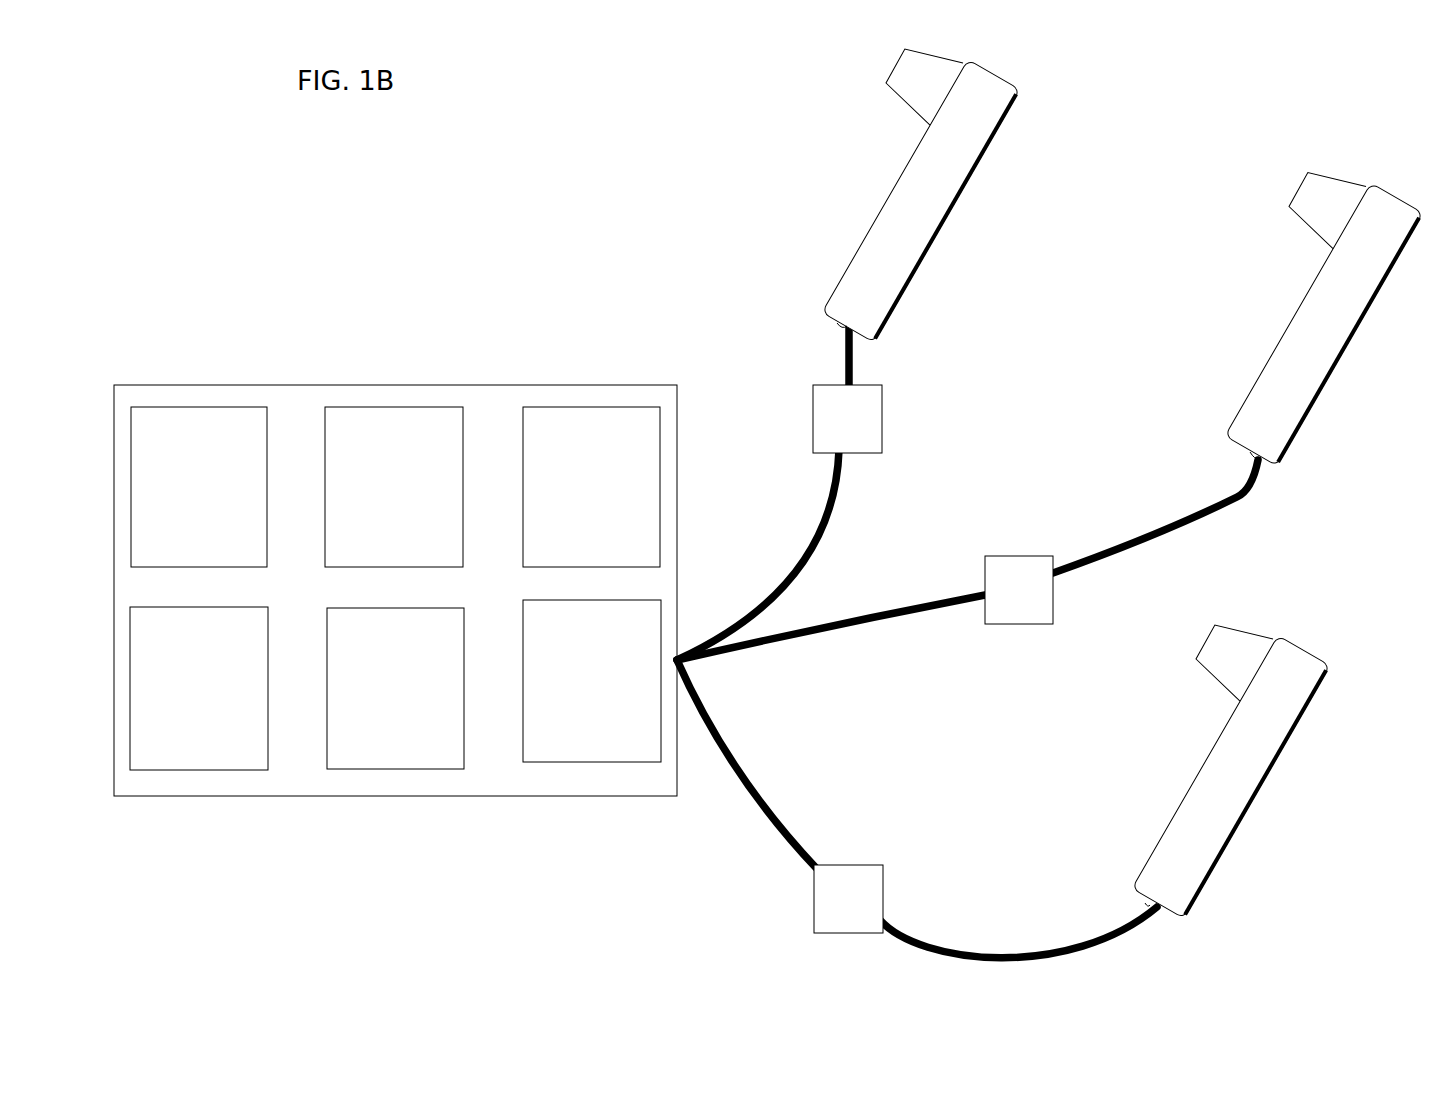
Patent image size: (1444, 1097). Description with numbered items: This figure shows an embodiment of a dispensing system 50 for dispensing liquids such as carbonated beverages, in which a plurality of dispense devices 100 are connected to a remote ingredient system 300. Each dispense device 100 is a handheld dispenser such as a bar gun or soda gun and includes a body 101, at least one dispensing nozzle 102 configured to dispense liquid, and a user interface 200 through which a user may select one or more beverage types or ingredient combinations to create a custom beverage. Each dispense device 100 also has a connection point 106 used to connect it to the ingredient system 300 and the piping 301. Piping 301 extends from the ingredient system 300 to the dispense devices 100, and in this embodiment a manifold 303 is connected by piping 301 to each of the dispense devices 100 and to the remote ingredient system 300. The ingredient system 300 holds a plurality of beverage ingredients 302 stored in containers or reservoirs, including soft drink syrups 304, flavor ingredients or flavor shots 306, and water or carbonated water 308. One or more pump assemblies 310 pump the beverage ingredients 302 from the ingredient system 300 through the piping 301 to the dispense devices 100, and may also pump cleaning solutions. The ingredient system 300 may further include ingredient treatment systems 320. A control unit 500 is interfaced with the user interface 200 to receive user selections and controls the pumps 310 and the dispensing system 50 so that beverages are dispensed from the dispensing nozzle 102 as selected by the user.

The dispensing system 50 is at (541, 206).
The dispense device 100 is at (1020, 476).
The body 101 is at (933, 163).
The dispensing nozzle 102 is at (917, 83).
The connection point 106 is at (837, 323).
The user interface 200 is at (952, 215).
The ingredient system 300 is at (307, 385).
The piping 301 is at (803, 552).
The beverage ingredient 302 is at (184, 410).
The manifold 303 is at (828, 431).
The soft drink syrup 304 is at (179, 498).
The flavor ingredient 306 is at (375, 498).
The carbonated water 308 is at (572, 498).
The pump assembly 310 is at (573, 693).
The ingredient treatment system 320 is at (376, 699).
The control unit 500 is at (179, 699).